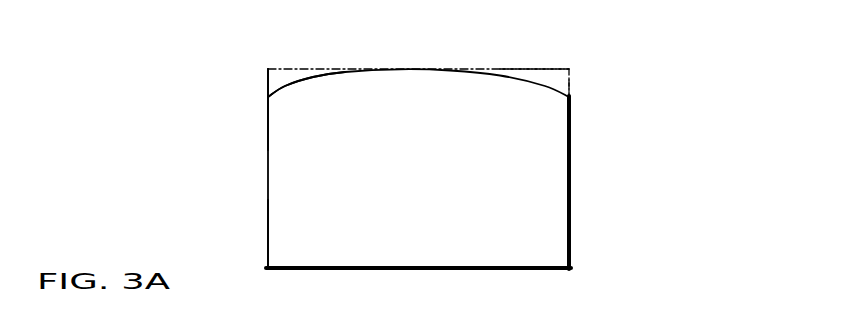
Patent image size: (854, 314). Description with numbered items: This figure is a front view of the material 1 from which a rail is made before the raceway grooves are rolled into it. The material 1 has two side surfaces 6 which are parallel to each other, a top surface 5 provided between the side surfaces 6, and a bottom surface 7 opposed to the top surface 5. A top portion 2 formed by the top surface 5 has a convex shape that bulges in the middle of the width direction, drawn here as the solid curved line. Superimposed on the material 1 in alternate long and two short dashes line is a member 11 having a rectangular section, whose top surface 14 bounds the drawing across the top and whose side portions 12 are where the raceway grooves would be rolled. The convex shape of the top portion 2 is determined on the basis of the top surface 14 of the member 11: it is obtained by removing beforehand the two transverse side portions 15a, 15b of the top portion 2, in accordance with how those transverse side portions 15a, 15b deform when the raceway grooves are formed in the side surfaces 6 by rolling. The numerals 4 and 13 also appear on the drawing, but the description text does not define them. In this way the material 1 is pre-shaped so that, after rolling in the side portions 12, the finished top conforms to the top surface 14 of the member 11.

The material 1 is at (653, 112).
The top portion 2 is at (432, 88).
The side wall 4 is at (290, 181).
The top surface 5 is at (313, 78).
The side surfaces 6 is at (268, 131).
The bottom surface 7 is at (542, 268).
The member 11 is at (569, 85).
The side portions 12 is at (293, 220).
The top reference line 13 is at (393, 70).
The top surface 14 is at (555, 68).
The transverse side portion 15a is at (282, 75).
The transverse side portion 15b is at (535, 70).